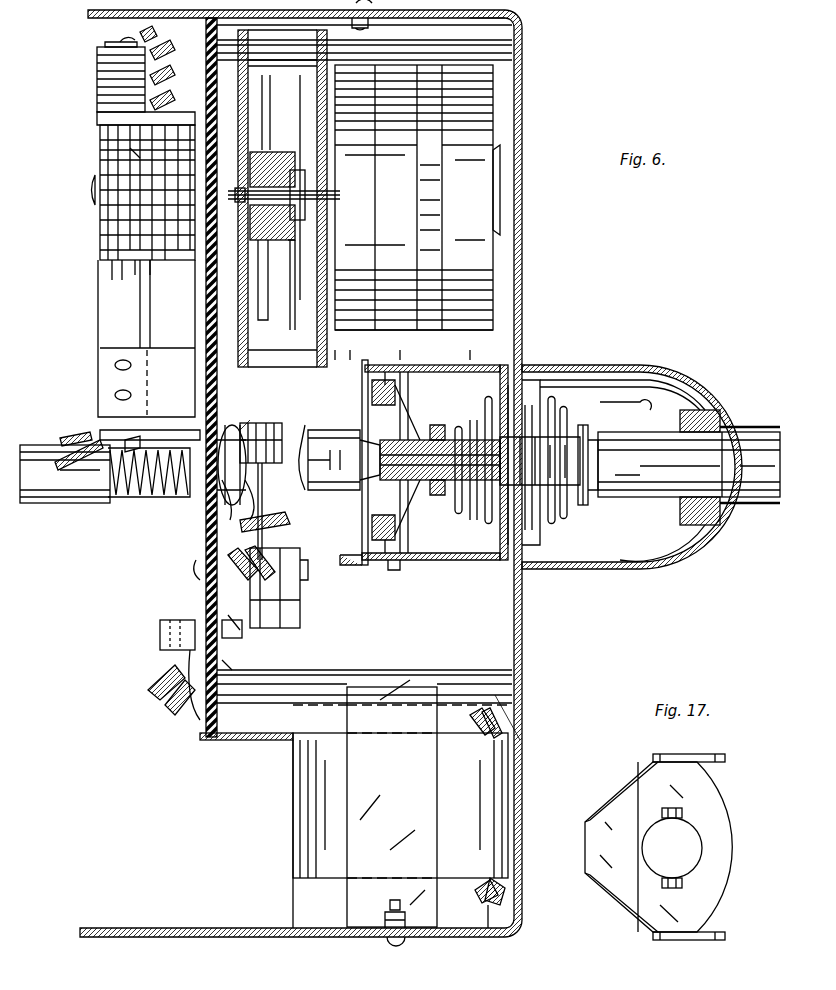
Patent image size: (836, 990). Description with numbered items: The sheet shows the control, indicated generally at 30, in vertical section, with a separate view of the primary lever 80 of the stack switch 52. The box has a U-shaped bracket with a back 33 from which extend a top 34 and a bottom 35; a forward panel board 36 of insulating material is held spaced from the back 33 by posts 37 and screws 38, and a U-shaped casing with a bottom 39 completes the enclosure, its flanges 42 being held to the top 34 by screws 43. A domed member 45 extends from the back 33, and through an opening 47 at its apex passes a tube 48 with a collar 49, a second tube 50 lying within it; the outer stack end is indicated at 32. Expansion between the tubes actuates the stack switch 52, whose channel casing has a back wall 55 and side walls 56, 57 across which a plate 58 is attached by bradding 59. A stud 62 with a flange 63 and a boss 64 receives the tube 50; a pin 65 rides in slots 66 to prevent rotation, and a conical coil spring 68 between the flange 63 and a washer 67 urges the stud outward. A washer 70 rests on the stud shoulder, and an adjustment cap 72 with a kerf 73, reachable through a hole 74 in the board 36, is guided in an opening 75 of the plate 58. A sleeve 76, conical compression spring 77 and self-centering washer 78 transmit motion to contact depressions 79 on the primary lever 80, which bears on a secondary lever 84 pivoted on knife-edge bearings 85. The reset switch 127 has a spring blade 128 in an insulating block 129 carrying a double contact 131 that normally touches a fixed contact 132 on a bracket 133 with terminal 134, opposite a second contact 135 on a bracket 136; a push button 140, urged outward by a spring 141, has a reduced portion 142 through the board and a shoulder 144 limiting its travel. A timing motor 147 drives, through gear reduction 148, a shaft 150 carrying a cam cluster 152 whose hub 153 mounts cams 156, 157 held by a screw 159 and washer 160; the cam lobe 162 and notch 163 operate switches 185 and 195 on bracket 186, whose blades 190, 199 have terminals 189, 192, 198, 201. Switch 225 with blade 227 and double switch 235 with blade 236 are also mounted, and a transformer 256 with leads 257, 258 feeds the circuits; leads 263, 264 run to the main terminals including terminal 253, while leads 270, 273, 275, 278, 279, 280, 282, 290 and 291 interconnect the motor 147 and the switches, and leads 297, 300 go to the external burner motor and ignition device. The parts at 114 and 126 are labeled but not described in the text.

In FIG. 6, the switch assembly 30 is at (575, 256).
In FIG. 6, the operating shaft end 32 is at (750, 398).
In FIG. 6, the back 33 is at (524, 304).
In FIG. 6, the top 34 is at (470, 18).
In FIG. 6, the bottom 35 is at (300, 937).
In FIG. 6, the forward panel board 36 is at (218, 100).
In FIG. 6, the posts 37 is at (500, 50).
In FIG. 6, the screws 38 is at (190, 700).
In FIG. 6, the casing bottom 39 is at (280, 742).
In FIG. 6, the flanges 42 is at (490, 30).
In FIG. 6, the screws 43 is at (360, 28).
In FIG. 6, the domed member 45 is at (668, 570).
In FIG. 6, the opening 47 is at (730, 508).
In FIG. 6, the tube 48 is at (758, 505).
In FIG. 6, the collar 49 is at (706, 526).
In FIG. 6, the second tube 50 is at (636, 432).
In FIG. 6, the stack switch 52 is at (385, 582).
In FIG. 6, the back wall 55 is at (546, 412).
In FIG. 6, the side wall 56 is at (508, 350).
In FIG. 6, the side wall 57 is at (440, 562).
In FIG. 6, the plate 58 is at (362, 527).
In FIG. 6, the bradding 59 is at (362, 392).
In FIG. 6, the stud 62 is at (575, 428).
In FIG. 6, the flange 63 is at (588, 430).
In FIG. 6, the boss 64 is at (598, 490).
In FIG. 6, the pin 65 is at (506, 562).
In FIG. 6, the slots 66 is at (520, 360).
In FIG. 6, the washer 67 is at (538, 398).
In FIG. 6, the conical coil spring 68 is at (565, 512).
In FIG. 6, the washer 70 is at (485, 520).
In FIG. 6, the adjustment cap 72 is at (345, 432).
In FIG. 6, the kerf 73 is at (310, 495).
In FIG. 6, the hole 74 is at (234, 482).
In FIG. 6, the opening 75 is at (378, 490).
In FIG. 6, the sleeve 76 is at (362, 542).
In FIG. 6, the conical compression spring 77 is at (470, 518).
In FIG. 6, the self-centering washer 78 is at (470, 420).
In FIG. 6, the contact depressions 79 is at (428, 428).
In FIG. 17, the contact depressions 79 is at (683, 813).
In FIG. 6, the primary lever 80 is at (412, 560).
In FIG. 17, the primary lever 80 is at (712, 806).
In FIG. 6, the secondary lever 84 is at (392, 525).
In FIG. 6, the knife-edge bearings 85 is at (400, 360).
In FIG. 6, the spring 114 is at (266, 505).
In FIG. 6, the gear 126 is at (105, 115).
In FIG. 6, the reset switch 127 is at (252, 560).
In FIG. 6, the spring blade 128 is at (263, 480).
In FIG. 6, the insulating block 129 is at (265, 614).
In FIG. 6, the double contact 131 is at (256, 428).
In FIG. 6, the fixed contact 132 is at (247, 424).
In FIG. 6, the short bracket 133 is at (215, 428).
In FIG. 6, the terminal 134 is at (200, 562).
In FIG. 6, the second contact 135 is at (275, 440).
In FIG. 6, the bracket 136 is at (280, 445).
In FIG. 6, the push button member 140 is at (62, 505).
In FIG. 6, the spring 141 is at (112, 470).
In FIG. 6, the reduced portion 142 is at (165, 498).
In FIG. 6, the shoulder 144 is at (150, 492).
In FIG. 6, the timing motor 147 is at (490, 115).
In FIG. 6, the gear reduction mechanism 148 is at (264, 260).
In FIG. 6, the timing shaft 150 is at (192, 192).
In FIG. 6, the cluster of cams 152 is at (95, 242).
In FIG. 6, the hub member 153 is at (218, 138).
In FIG. 6, the cam 156 is at (120, 268).
In FIG. 6, the cam 157 is at (105, 140).
In FIG. 6, the screw 159 is at (95, 186).
In FIG. 6, the washer 160 is at (98, 165).
In FIG. 6, the cam lobe 162 is at (135, 155).
In FIG. 6, the notch 163 is at (102, 135).
In FIG. 6, the switch 185 is at (150, 320).
In FIG. 6, the bracket 186 is at (110, 375).
In FIG. 6, the terminal 189 is at (115, 462).
In FIG. 6, the spring blade 190 is at (138, 307).
In FIG. 6, the terminal 192 is at (137, 438).
In FIG. 6, the second switch 195 is at (98, 326).
In FIG. 6, the terminal 198 is at (110, 455).
In FIG. 6, the spring blade 199 is at (100, 340).
In FIG. 6, the terminal 201 is at (100, 435).
In FIG. 6, the switch 225 is at (88, 60).
In FIG. 6, the switch blade 227 is at (150, 55).
In FIG. 6, the double switch 235 is at (88, 78).
In FIG. 6, the blade 236 is at (110, 70).
In FIG. 6, the main terminal 253 is at (168, 640).
In FIG. 6, the transformer 256 is at (295, 834).
In FIG. 6, the main lead 257 is at (505, 895).
In FIG. 6, the lead 258 is at (478, 890).
In FIG. 6, the lead 263 is at (255, 580).
In FIG. 6, the lead 264 is at (200, 572).
In FIG. 6, the lead 270 is at (480, 708).
In FIG. 6, the line 273 is at (65, 460).
In FIG. 6, the branch 275 is at (110, 118).
In FIG. 6, the lead 278 is at (478, 726).
In FIG. 6, the lead 279 is at (72, 432).
In FIG. 6, the branch 280 is at (218, 80).
In FIG. 6, the lead 282 is at (135, 34).
In FIG. 6, the lead 290 is at (135, 482).
In FIG. 6, the lead 291 is at (180, 105).
In FIG. 6, the lead 297 is at (150, 690).
In FIG. 6, the lead 300 is at (168, 710).